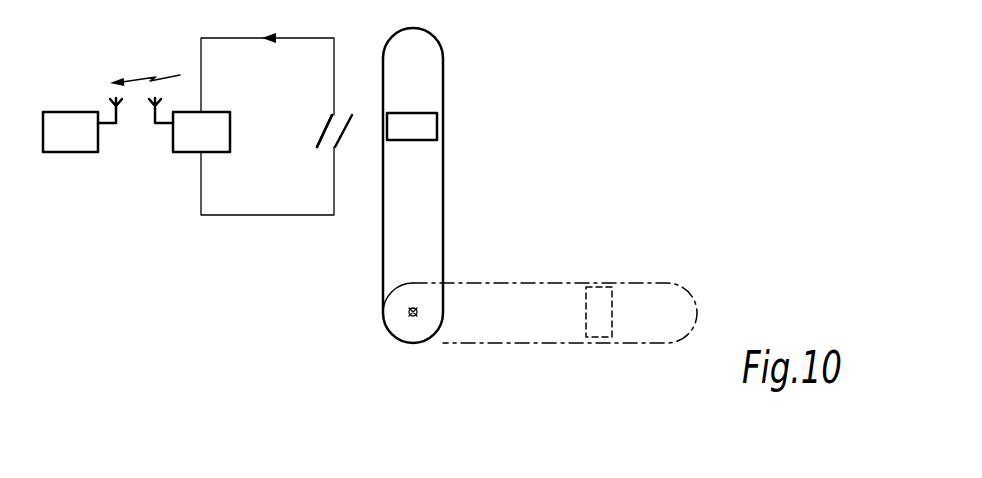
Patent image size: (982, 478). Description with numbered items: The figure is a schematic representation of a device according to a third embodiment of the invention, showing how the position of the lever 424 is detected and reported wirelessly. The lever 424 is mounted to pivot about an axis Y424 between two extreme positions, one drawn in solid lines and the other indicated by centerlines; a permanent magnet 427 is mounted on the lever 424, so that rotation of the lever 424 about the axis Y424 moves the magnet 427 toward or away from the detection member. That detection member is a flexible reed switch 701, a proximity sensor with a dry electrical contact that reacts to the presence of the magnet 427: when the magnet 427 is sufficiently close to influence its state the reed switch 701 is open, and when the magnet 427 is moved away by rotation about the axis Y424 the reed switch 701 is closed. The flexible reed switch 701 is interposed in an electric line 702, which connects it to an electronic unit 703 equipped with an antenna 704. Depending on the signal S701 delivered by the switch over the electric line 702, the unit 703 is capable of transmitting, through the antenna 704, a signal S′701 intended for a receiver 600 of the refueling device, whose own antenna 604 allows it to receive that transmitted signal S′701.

The receiver 600 is at (70, 132).
The antenna 604 is at (115, 125).
The electronic unit 703 is at (201, 132).
The antenna 704 is at (153, 125).
The flexible reed switch 701 is at (305, 125).
The electric line 702 is at (252, 215).
The signal S701 is at (270, 27).
The signal S′701 is at (145, 67).
The lever 424 is at (425, 199).
The permanent magnet 427 is at (413, 113).
The axis Y424 is at (407, 313).